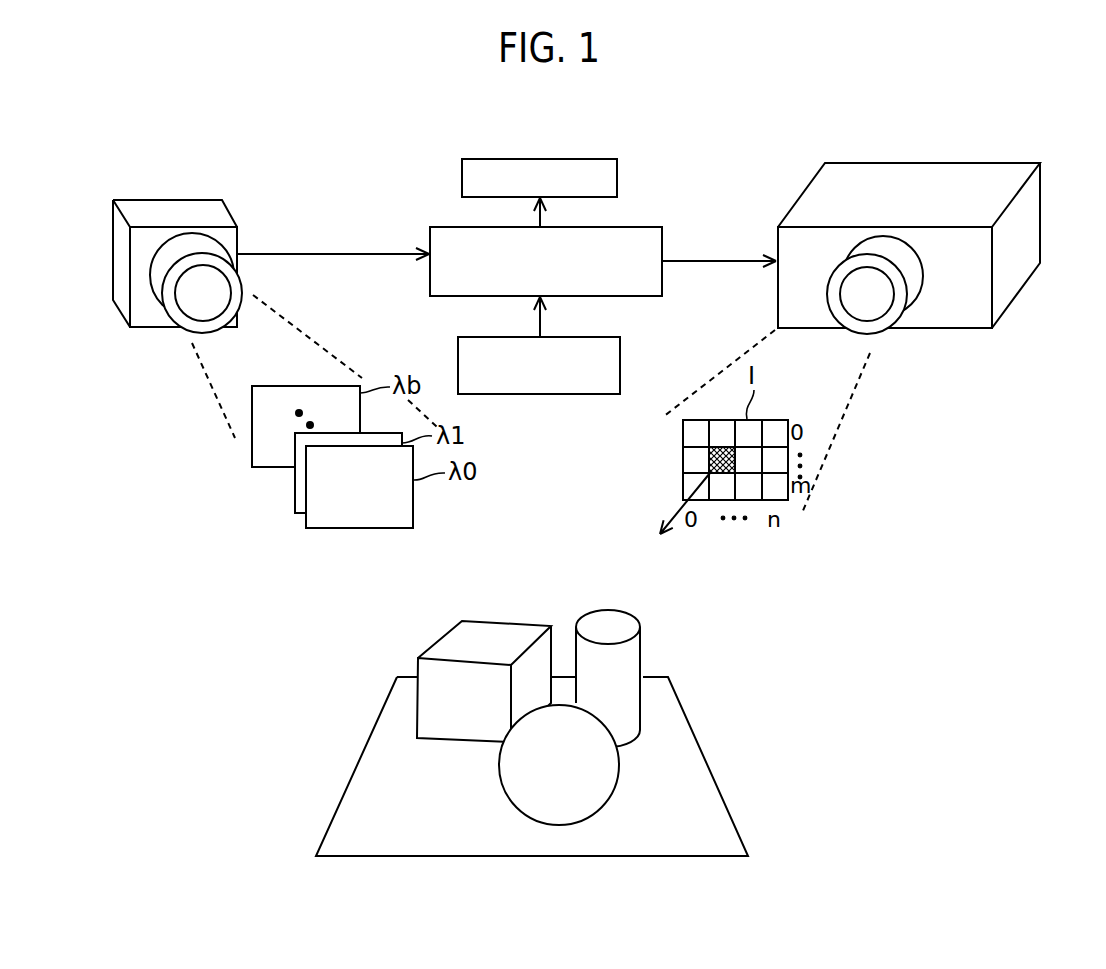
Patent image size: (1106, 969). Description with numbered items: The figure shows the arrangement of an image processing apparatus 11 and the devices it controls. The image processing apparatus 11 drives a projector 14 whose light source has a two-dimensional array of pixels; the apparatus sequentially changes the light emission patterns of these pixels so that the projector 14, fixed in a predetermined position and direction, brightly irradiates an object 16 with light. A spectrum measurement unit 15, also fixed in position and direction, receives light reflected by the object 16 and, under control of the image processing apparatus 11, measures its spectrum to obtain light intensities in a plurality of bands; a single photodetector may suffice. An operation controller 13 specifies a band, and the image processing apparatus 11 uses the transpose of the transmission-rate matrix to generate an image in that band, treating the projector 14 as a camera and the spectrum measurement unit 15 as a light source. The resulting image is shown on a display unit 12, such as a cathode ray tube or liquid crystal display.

The image processing apparatus 11 is at (662, 242).
The display unit 12 is at (617, 173).
The operation controller 13 is at (620, 358).
The projector 14 is at (1040, 215).
The spectrum measurement unit 15 is at (113, 254).
The object 16 is at (710, 758).